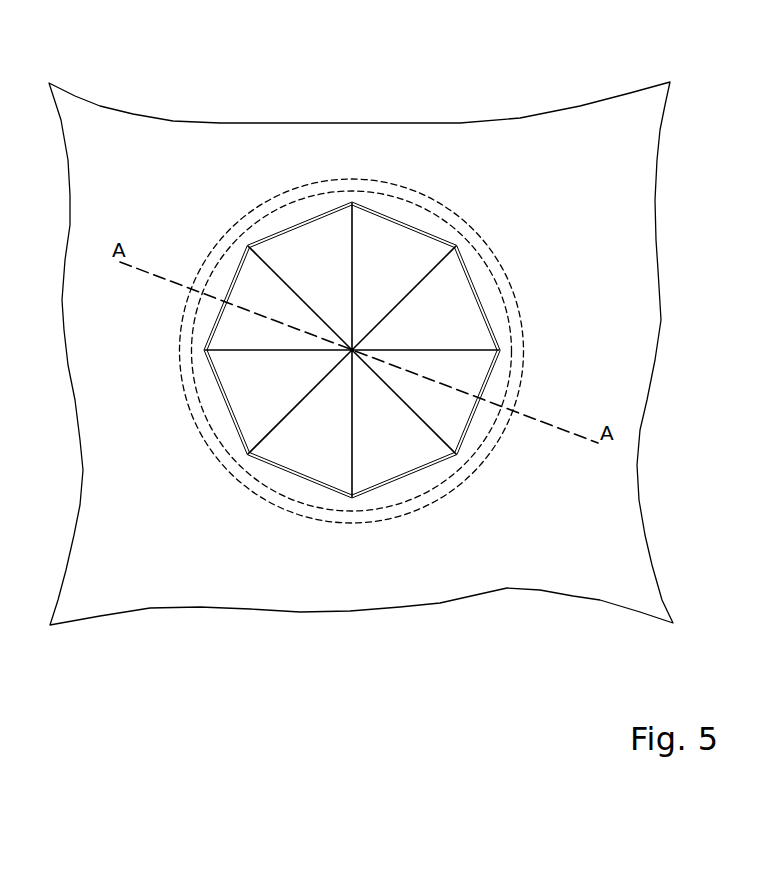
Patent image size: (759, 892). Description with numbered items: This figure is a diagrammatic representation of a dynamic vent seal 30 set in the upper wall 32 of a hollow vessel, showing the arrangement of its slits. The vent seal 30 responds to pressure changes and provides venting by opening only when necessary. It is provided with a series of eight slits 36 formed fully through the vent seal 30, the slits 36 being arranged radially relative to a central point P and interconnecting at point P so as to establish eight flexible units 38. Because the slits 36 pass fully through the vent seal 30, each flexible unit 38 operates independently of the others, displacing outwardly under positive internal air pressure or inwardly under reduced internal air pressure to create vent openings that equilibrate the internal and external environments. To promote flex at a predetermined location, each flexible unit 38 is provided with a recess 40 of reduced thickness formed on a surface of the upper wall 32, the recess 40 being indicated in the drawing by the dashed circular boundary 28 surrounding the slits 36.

The dashed circular boundary 28 is at (437, 488).
The vent seal 30 is at (485, 292).
The upper wall 32 is at (140, 145).
The slits 36 is at (480, 348).
The flexible units 38 is at (390, 250).
The recess 40 is at (487, 380).
The point P is at (352, 350).